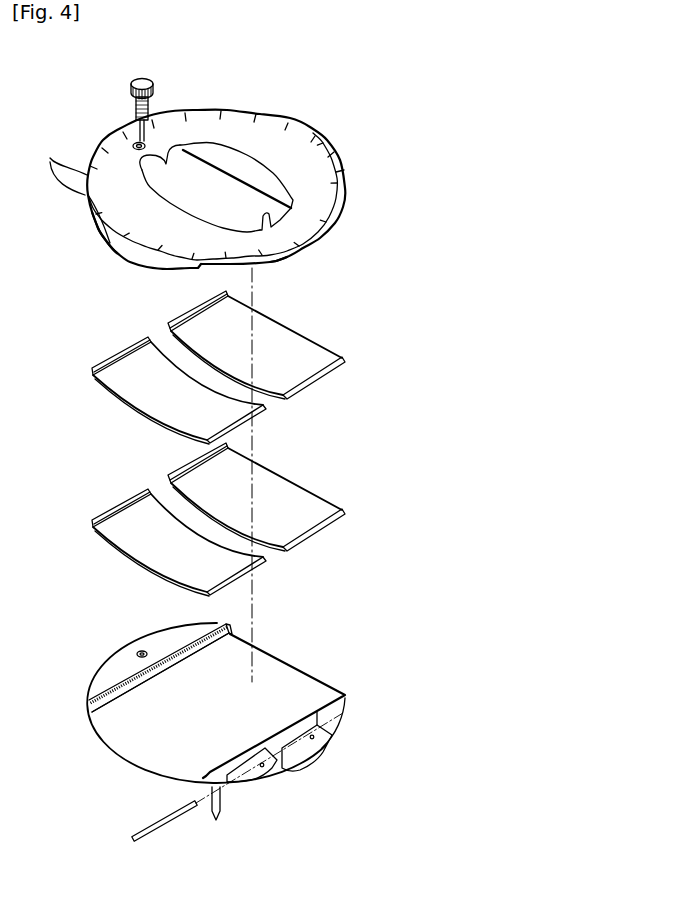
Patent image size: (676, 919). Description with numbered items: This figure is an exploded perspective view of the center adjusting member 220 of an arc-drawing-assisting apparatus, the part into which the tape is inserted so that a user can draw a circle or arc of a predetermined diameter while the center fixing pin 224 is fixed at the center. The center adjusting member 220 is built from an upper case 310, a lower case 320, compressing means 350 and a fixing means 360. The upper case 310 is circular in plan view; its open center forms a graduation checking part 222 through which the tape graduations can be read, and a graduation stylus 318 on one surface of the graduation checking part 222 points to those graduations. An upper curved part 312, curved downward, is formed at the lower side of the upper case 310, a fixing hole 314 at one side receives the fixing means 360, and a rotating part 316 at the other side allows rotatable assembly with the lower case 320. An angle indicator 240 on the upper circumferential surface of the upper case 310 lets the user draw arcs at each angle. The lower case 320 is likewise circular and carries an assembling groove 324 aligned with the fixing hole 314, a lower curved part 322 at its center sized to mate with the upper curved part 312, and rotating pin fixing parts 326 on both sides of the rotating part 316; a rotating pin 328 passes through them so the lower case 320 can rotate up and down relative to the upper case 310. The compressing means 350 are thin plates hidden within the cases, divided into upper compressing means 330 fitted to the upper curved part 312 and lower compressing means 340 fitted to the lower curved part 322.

The center adjusting member 220 is at (432, 175).
The graduation checking part 222 is at (232, 190).
The center fixing pin 224 is at (222, 803).
The angle indicator 240 is at (63, 167).
The upper case 310 is at (336, 148).
The upper curved part 312 is at (113, 253).
The fixing hole 314 is at (137, 145).
The rotating part 316 is at (280, 259).
The graduation stylus 318 is at (169, 150).
The lower case 320 is at (323, 683).
The lower curved part 322 is at (137, 752).
The assembling groove 324 is at (138, 652).
The rotating pin fixing parts 326 is at (277, 772).
The rotating pin 328 is at (178, 818).
The upper compressing means 330 is at (308, 383).
The lower compressing means 340 is at (312, 503).
The compressing means 350 is at (276, 443).
The fixing means 360 is at (140, 82).